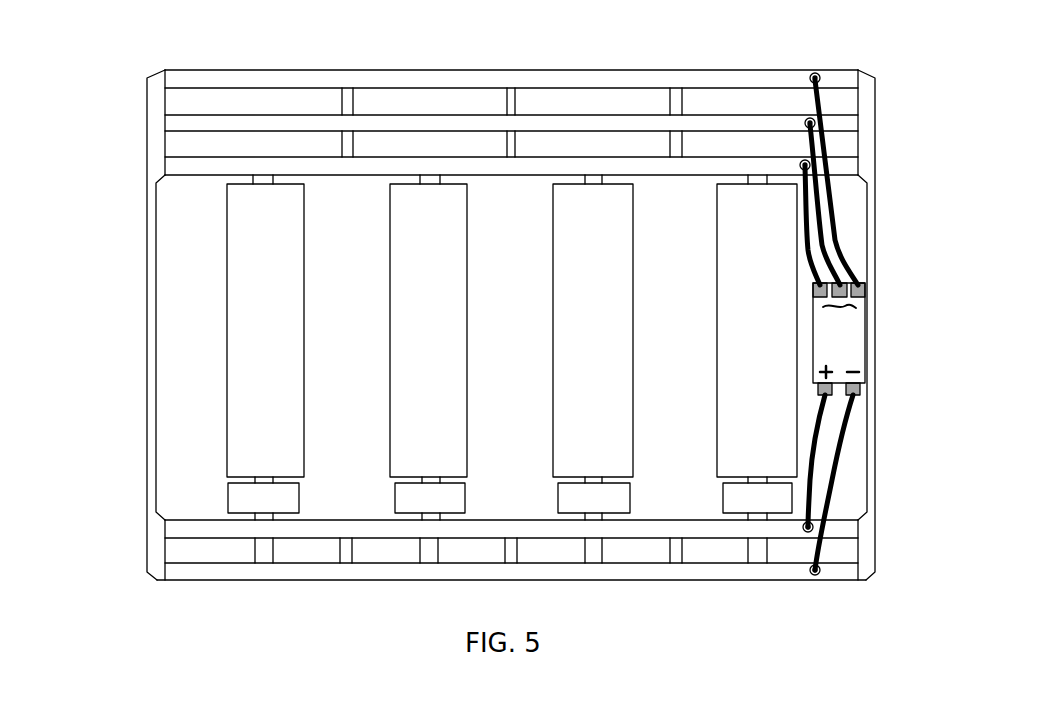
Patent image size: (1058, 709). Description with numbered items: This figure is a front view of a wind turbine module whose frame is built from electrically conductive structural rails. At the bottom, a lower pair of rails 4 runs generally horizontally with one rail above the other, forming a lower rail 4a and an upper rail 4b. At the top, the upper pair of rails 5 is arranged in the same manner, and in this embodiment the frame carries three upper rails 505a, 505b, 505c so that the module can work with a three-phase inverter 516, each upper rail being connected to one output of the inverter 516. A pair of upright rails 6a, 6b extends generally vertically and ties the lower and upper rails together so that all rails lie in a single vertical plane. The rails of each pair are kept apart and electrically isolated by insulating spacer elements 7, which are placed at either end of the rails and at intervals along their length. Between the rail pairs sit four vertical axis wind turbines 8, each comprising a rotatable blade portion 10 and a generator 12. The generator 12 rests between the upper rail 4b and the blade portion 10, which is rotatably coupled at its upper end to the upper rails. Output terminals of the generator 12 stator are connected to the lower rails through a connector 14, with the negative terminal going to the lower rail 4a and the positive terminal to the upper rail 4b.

The lower pair of rails 4 is at (560, 556).
The lower rail 4a is at (207, 570).
The upper rail 4b is at (330, 522).
The upper pair of rails 5 is at (252, 99).
The upper rail 505a is at (569, 164).
The upper rail 505b is at (753, 120).
The upper rail 505c is at (381, 80).
The upright rail 6a is at (147, 380).
The upright rail 6b is at (868, 240).
The insulating spacer element 7 is at (676, 553).
The vertical axis wind turbine 8 is at (324, 306).
The blade portion 10 is at (439, 330).
The generator 12 is at (438, 500).
The connector 14 is at (757, 552).
The three-phase inverter 516 is at (850, 340).